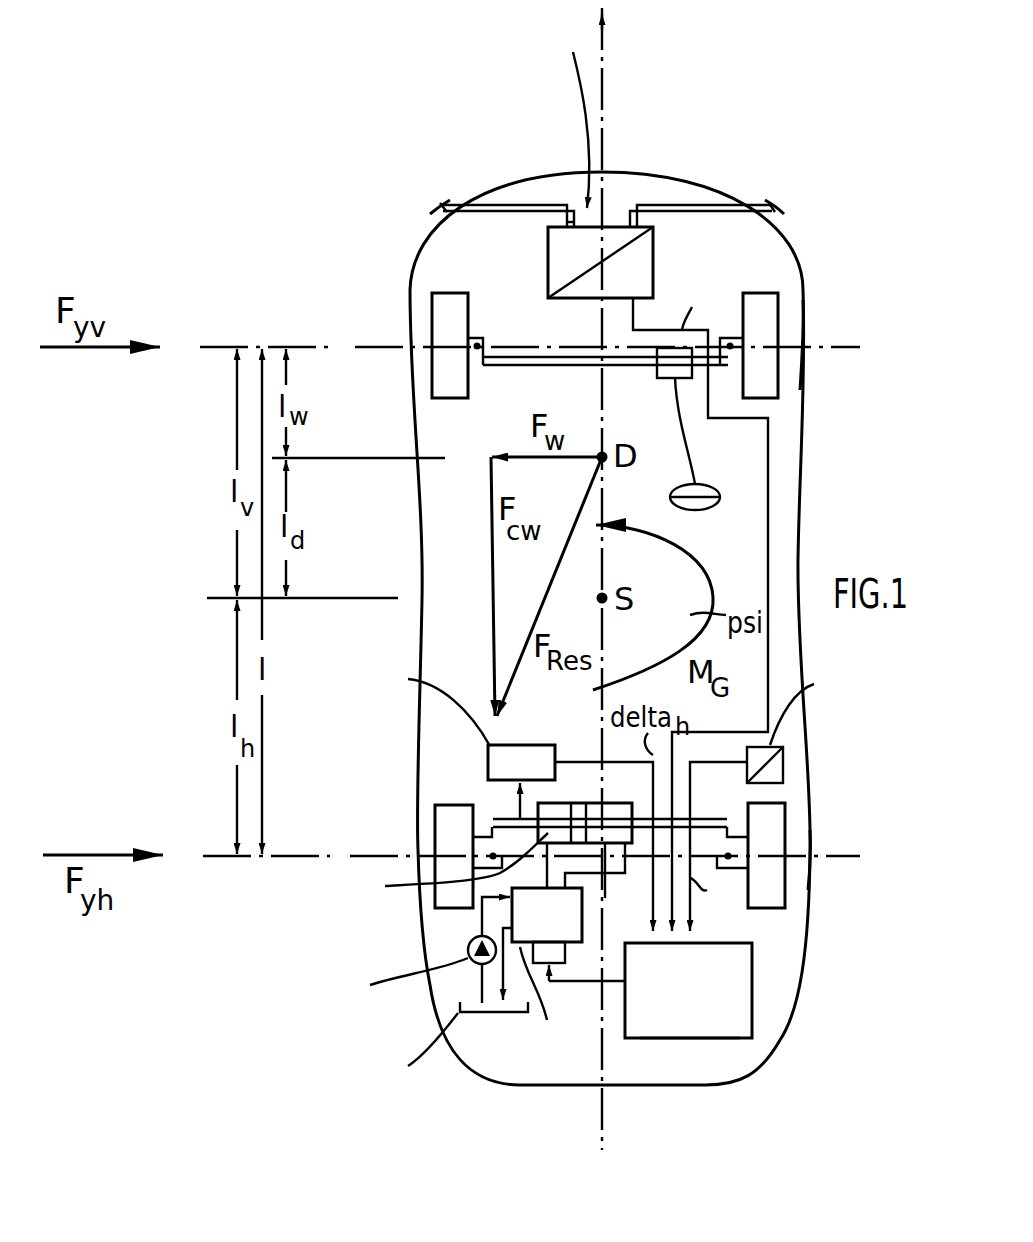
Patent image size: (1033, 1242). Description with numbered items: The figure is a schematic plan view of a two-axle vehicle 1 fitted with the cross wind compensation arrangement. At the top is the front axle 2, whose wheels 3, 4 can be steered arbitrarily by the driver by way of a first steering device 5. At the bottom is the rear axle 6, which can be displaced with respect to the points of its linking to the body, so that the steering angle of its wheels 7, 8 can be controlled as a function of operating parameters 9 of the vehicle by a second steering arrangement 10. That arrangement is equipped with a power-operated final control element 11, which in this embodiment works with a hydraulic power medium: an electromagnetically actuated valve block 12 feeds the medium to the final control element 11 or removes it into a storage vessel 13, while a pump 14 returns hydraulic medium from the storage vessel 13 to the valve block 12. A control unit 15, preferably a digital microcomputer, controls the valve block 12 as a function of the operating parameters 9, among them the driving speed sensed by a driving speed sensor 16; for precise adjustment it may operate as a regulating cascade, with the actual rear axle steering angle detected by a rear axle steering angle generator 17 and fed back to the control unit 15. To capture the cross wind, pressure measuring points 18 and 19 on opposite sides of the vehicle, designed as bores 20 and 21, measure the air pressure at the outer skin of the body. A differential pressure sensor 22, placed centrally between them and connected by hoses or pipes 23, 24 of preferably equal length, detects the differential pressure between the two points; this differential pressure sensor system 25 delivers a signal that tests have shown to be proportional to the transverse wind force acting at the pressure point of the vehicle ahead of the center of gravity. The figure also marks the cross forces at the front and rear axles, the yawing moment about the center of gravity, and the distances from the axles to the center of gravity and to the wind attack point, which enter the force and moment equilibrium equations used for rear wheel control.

The two-axle vehicle 1 is at (728, 124).
The front axle 2 is at (812, 297).
The front wheel 3 is at (778, 366).
The front wheel 4 is at (432, 312).
The first steering device 5 is at (699, 441).
The rear axle 6 is at (820, 815).
The rear wheel 7 is at (785, 881).
The rear wheel 8 is at (435, 830).
The operating parameters 9 is at (727, 919).
The second steering arrangement 10 is at (488, 800).
The final control element 11 is at (594, 762).
The valve block 12 is at (580, 912).
The storage vessel 13 is at (460, 1011).
The pump 14 is at (468, 948).
The control unit 15 is at (693, 1025).
The driving speed sensor 16 is at (785, 769).
The rear axle steering angle generator 17 is at (508, 752).
The pressure measuring point 18 is at (445, 199).
The pressure measuring point 19 is at (776, 195).
The bore 20 is at (445, 206).
The bore 21 is at (772, 207).
The differential pressure sensor 22 is at (548, 259).
The hose or pipe 23 is at (510, 207).
The hose or pipe 24 is at (668, 207).
The differential pressure sensor system 25 is at (585, 173).